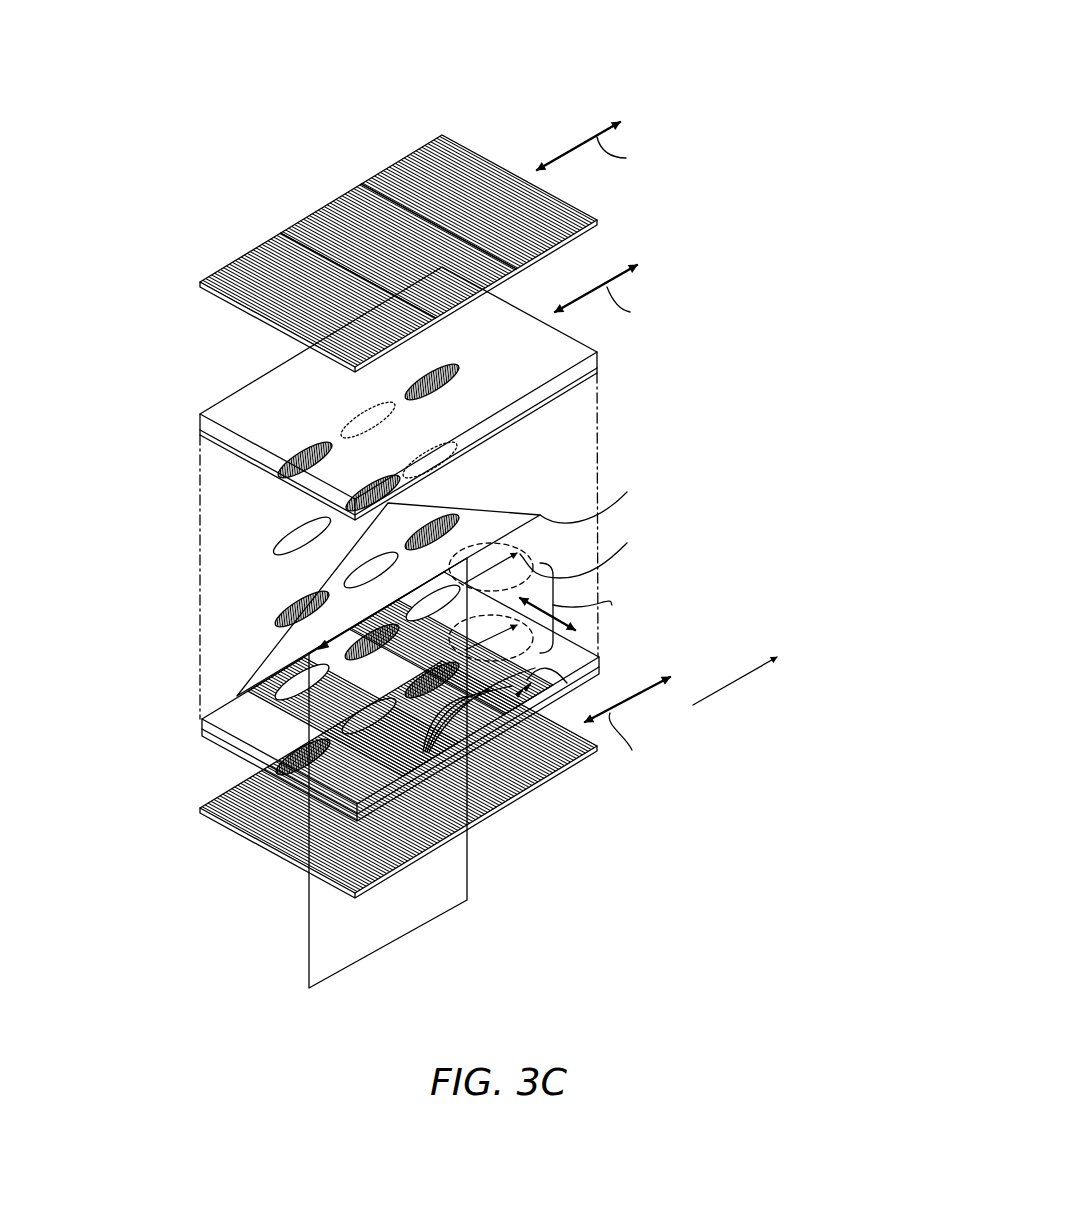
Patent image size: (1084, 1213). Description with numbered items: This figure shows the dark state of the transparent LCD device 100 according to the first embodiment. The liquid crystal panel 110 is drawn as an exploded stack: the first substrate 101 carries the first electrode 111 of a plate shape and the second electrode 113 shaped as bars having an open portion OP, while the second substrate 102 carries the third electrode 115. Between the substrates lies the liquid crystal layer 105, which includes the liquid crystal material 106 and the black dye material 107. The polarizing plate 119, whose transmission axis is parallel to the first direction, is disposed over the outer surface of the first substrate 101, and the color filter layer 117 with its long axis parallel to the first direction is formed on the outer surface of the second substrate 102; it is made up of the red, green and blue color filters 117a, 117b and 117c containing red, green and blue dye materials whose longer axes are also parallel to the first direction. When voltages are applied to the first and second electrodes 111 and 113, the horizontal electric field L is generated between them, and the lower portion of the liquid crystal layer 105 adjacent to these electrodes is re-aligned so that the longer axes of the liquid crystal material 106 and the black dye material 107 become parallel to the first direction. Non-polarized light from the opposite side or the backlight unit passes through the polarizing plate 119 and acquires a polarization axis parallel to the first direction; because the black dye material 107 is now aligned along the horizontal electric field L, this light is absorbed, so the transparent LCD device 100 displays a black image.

The transparent LCD device 100 is at (427, 30).
The color filter layer 117 is at (377, 228).
The red color filter 117a is at (253, 270).
The green color filter 117b is at (332, 222).
The blue color filter 117c is at (402, 173).
The liquid crystal panel 110 is at (192, 350).
The second substrate 102 is at (228, 412).
The third electrode 115 is at (200, 433).
The liquid crystal layer 105 is at (290, 560).
The liquid crystal material 106 is at (308, 527).
The black dye material 107 is at (280, 618).
The open portion OP is at (288, 629).
The second electrode 113 is at (252, 677).
The first electrode 111 is at (227, 716).
The first substrate 101 is at (203, 737).
The polarizing plate 119 is at (555, 782).
The horizontal electric field L is at (582, 669).